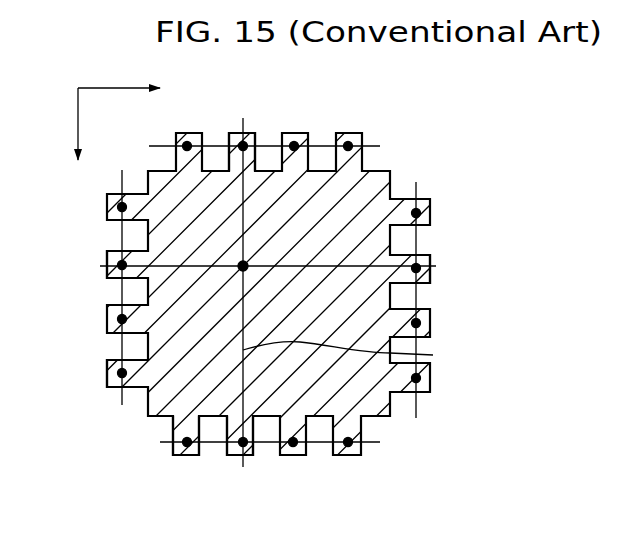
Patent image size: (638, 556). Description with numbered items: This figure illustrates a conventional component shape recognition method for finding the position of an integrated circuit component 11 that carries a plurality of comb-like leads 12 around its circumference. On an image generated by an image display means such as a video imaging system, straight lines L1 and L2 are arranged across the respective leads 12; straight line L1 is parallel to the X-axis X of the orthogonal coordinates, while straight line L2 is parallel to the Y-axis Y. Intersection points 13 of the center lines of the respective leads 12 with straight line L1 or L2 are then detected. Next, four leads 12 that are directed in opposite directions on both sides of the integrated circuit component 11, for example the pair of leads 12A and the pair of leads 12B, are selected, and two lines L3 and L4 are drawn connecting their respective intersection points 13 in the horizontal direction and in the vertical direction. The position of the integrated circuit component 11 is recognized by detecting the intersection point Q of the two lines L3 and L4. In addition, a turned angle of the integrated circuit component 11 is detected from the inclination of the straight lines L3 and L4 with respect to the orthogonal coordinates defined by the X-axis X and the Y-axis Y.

The integrated circuit component 11 is at (155, 412).
The lead 12 is at (108, 363).
The lead 12A is at (108, 262).
The lead 12B is at (242, 133).
The intersection point 13 is at (262, 141).
The intersection point Q is at (246, 269).
The straight line L1 is at (379, 143).
The straight line L2 is at (118, 402).
The line L3 is at (300, 266).
The line L4 is at (351, 363).
The X-axis X is at (128, 90).
The Y-axis Y is at (76, 138).